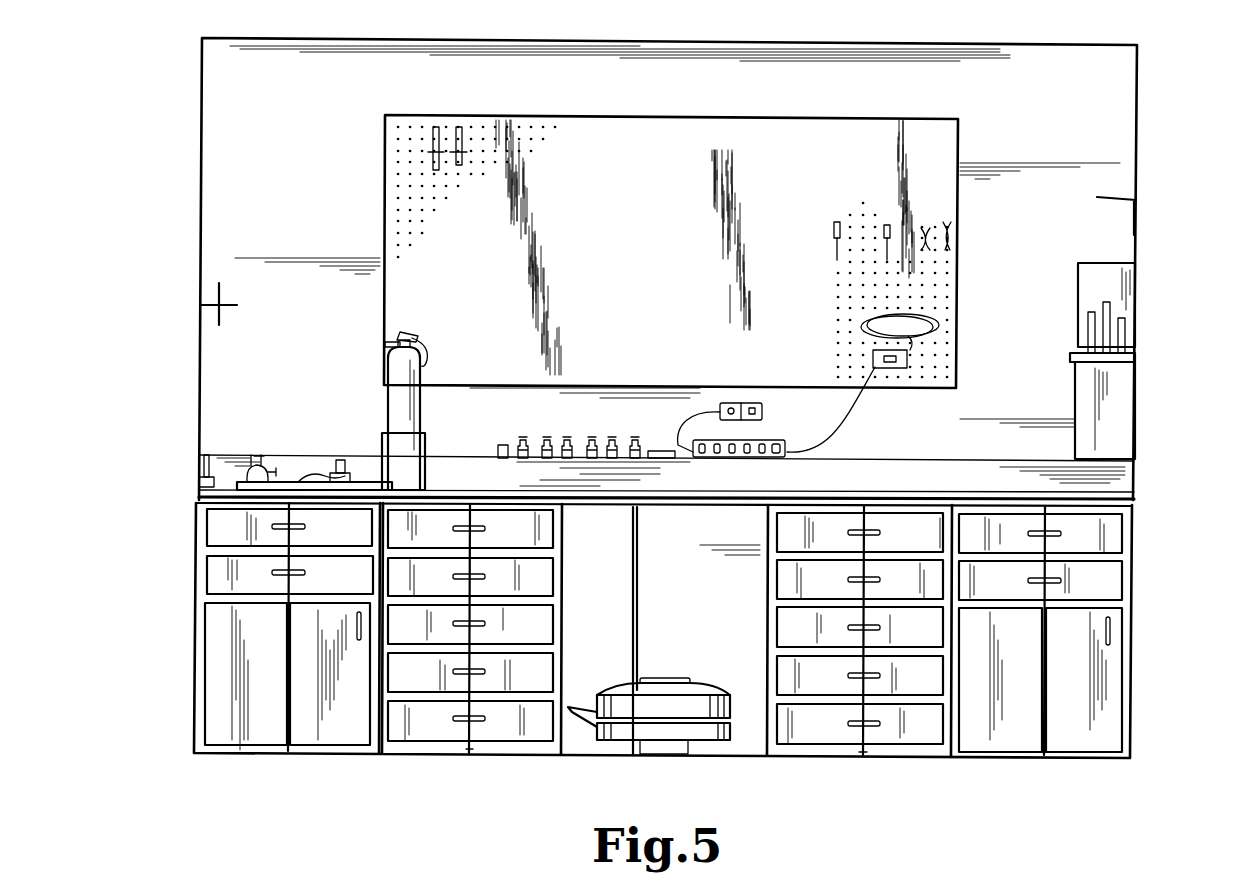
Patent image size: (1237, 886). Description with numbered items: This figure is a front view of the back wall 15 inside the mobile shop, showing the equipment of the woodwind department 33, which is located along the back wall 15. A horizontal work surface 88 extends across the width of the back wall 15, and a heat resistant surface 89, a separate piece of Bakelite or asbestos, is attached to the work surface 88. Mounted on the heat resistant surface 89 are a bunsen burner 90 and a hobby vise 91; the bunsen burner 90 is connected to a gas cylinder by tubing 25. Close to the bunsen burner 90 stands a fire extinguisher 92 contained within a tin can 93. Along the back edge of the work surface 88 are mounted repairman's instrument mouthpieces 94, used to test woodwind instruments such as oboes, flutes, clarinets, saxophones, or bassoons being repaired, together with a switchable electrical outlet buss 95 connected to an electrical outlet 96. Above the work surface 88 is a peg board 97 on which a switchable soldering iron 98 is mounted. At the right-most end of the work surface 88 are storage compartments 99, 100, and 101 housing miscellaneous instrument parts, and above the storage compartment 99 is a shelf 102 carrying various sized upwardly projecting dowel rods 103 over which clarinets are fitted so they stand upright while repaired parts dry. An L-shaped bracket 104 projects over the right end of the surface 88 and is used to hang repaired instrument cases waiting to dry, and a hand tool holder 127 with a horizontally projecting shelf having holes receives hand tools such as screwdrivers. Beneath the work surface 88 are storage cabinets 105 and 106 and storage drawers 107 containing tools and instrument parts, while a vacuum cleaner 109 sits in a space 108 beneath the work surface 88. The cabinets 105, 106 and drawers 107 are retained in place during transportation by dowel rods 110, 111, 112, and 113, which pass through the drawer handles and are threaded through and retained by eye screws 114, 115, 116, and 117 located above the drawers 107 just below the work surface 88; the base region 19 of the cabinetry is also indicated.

The back wall 15 is at (927, 59).
The woodwind department 33 is at (1150, 108).
The peg board 97 is at (800, 160).
The L-shaped bracket 104 is at (1133, 200).
The hand tool holder 127 is at (213, 306).
The storage compartment 101 is at (1090, 299).
The dowel rods 103 is at (1125, 320).
The shelf 102 is at (1125, 360).
The storage compartment 100 is at (1076, 386).
The storage compartment 99 is at (1125, 406).
The horizontal work surface 88 is at (1125, 476).
The heat resistant surface 89 is at (242, 509).
The hobby vise 91 is at (255, 456).
The tubing 25 is at (300, 481).
The bunsen burner 90 is at (348, 462).
The fire extinguisher 92 is at (418, 409).
The tin can 93 is at (425, 443).
The repairman's instrument mouthpieces 94 is at (635, 437).
The electrical outlet 96 is at (762, 412).
The switchable electrical outlet buss 95 is at (787, 452).
The switchable soldering iron 98 is at (907, 360).
The storage drawers 107 is at (222, 568).
The dowel rod 110 is at (283, 736).
The storage cabinet 105 is at (345, 735).
The storage cabinet 106 is at (1120, 668).
The space 108 is at (720, 553).
The vacuum cleaner 109 is at (731, 700).
The cabinet base 19 is at (745, 750).
The eye screw 114 is at (292, 507).
The eye screw 115 is at (472, 507).
The dowel rod 111 is at (471, 751).
The eye screw 116 is at (866, 507).
The dowel rod 112 is at (866, 754).
The eye screw 117 is at (1047, 507).
The dowel rod 113 is at (1045, 750).